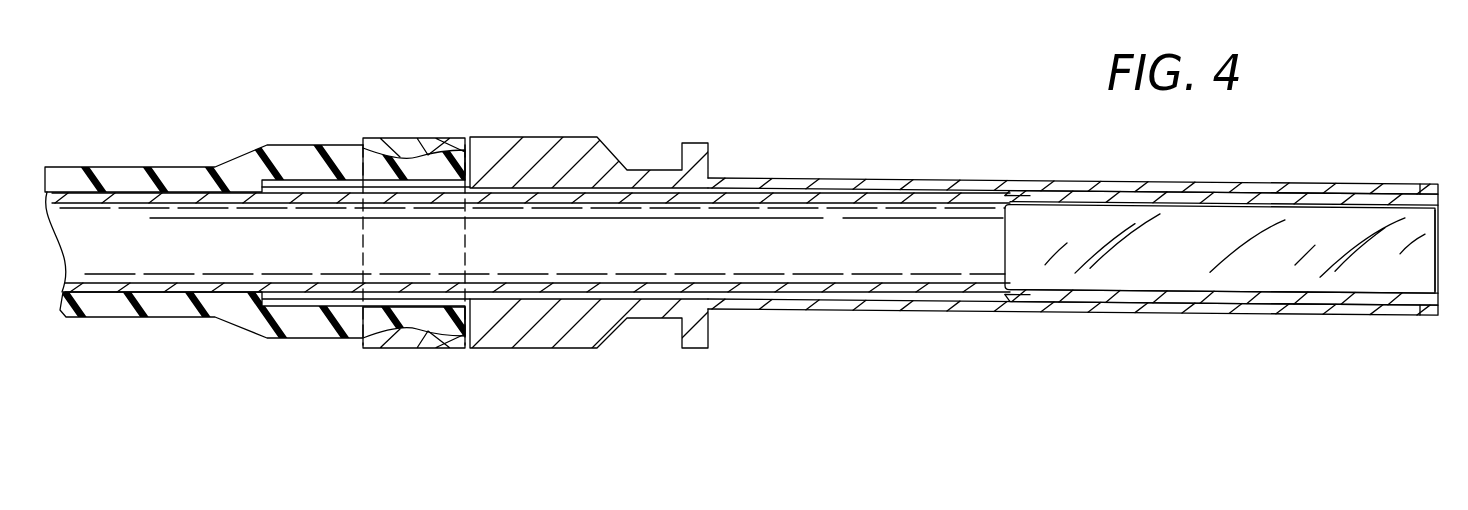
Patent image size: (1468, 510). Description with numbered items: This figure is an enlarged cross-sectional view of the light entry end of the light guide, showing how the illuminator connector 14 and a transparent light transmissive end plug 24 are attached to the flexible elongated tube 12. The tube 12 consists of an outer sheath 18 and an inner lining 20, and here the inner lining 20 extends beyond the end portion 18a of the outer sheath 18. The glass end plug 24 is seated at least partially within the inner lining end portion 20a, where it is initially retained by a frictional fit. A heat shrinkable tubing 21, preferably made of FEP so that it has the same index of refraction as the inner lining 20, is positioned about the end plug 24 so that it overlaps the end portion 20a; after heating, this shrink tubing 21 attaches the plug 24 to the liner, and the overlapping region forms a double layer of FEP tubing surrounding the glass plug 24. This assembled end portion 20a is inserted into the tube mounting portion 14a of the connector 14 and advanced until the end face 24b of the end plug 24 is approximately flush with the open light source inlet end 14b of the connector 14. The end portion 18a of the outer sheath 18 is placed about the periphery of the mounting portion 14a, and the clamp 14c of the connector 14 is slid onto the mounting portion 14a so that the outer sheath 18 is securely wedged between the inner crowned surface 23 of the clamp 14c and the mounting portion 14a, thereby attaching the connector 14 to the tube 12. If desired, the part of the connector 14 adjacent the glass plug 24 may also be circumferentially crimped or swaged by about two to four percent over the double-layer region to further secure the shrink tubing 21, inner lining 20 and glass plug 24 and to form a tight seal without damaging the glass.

The elongated tube 12 is at (181, 142).
The illuminator connector 14 is at (664, 122).
The tube mounting portion 14a is at (415, 307).
The light source inlet end 14b is at (1397, 186).
The clamp 14c is at (407, 153).
The outer sheath 18 is at (113, 178).
The end portion of outer sheath 18a is at (345, 163).
The inner lining 20 is at (153, 292).
The inner lining end portion 20a is at (1041, 296).
The heat shrinkable tubing 21 is at (1037, 196).
The inner crowned surface 23 is at (415, 156).
The light transmissive end plug 24 is at (1152, 262).
The end face of end plug 24b is at (1438, 281).